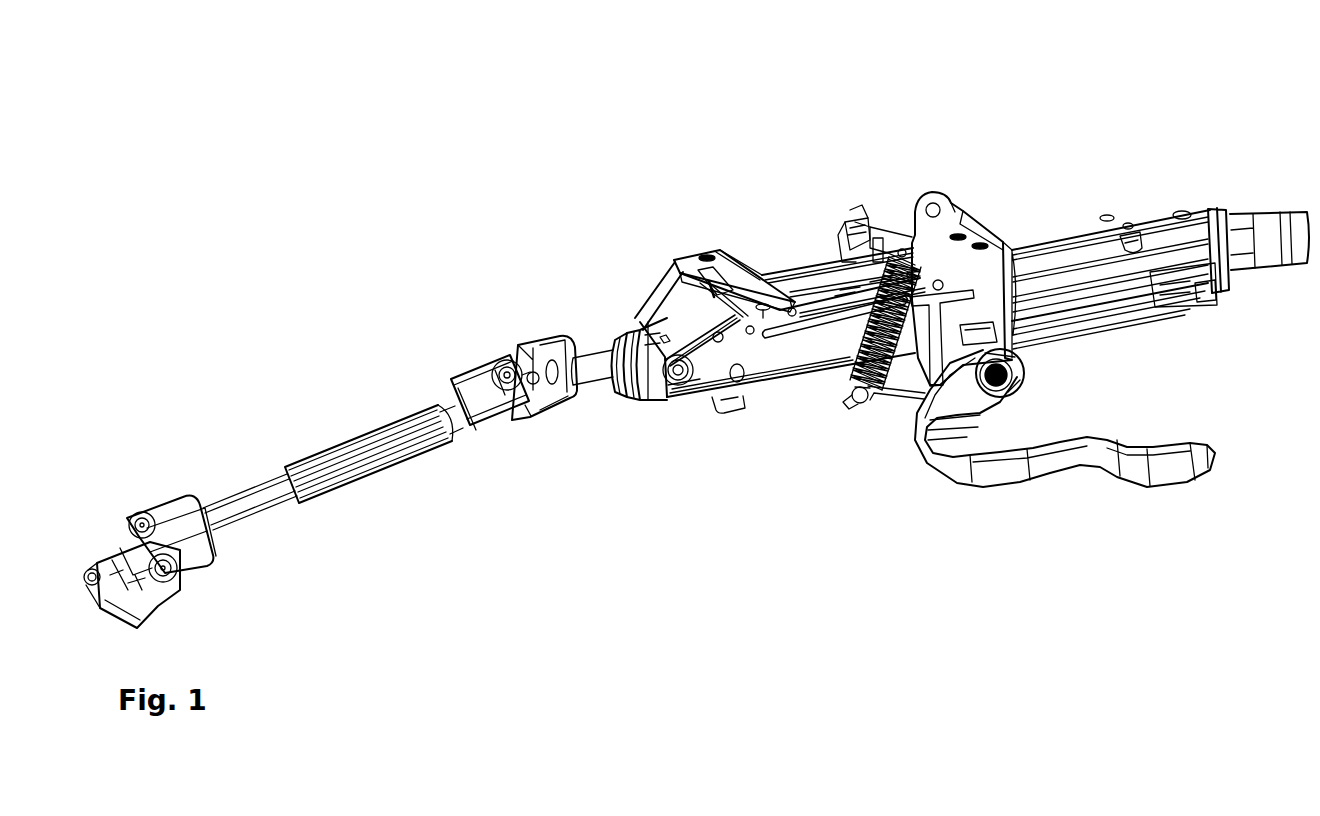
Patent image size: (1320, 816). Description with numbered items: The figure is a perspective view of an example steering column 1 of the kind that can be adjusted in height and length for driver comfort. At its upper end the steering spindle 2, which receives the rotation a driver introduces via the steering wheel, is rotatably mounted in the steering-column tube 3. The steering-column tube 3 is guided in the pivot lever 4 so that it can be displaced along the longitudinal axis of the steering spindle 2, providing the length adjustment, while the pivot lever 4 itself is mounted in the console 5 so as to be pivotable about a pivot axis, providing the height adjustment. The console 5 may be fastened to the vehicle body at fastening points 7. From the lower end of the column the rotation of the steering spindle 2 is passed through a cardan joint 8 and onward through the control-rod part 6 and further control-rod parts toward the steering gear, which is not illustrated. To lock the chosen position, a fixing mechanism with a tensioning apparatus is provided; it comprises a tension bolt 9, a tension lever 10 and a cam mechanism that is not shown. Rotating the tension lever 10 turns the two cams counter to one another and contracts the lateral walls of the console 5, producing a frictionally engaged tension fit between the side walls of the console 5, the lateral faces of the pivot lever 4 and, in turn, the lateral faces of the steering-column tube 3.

The steering column 1 is at (843, 200).
The steering spindle 2 is at (1265, 232).
The steering-column tube 3 is at (1162, 243).
The pivot lever 4 is at (672, 318).
The console 5 is at (983, 277).
The control-rod part 6 is at (352, 430).
The fastening points 7 is at (765, 272).
The cardan joint 8 is at (542, 430).
The tension bolt 9 is at (1023, 373).
The tension lever 10 is at (990, 477).